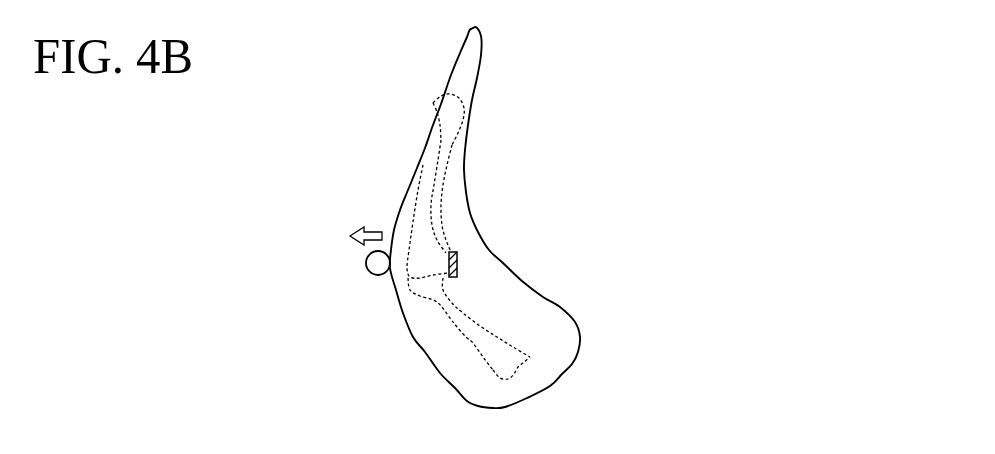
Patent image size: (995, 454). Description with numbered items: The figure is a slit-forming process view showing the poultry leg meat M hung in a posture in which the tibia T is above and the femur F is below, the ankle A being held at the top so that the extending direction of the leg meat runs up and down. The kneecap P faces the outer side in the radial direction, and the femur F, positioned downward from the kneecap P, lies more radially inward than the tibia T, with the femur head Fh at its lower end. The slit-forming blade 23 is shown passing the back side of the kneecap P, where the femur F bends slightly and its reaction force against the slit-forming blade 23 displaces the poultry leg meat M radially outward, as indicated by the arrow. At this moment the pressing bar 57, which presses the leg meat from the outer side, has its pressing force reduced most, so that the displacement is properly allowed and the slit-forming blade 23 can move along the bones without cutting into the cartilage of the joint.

The pressing bar 57 is at (366, 263).
The slit-forming blade 23 is at (458, 262).
The ankle A is at (433, 106).
The tibia T is at (431, 170).
The kneecap P is at (408, 272).
The femur F is at (473, 343).
The femur head Fh is at (520, 367).
The poultry leg meat M is at (575, 322).